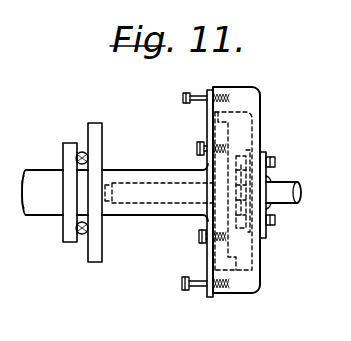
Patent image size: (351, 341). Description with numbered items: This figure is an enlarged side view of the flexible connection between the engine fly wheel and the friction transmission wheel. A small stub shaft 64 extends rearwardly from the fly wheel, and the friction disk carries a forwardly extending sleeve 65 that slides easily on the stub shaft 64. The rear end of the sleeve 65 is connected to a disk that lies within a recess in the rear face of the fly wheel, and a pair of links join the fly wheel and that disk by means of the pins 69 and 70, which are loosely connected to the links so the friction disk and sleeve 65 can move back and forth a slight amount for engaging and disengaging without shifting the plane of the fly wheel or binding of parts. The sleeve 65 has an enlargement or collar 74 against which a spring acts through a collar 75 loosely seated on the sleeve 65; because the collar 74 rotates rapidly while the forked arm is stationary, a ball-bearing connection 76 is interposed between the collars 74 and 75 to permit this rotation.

The stub shaft 64 is at (152, 197).
The sleeve 65 is at (170, 216).
The pin 69 is at (183, 98).
The pin 70 is at (197, 148).
The collar 74 is at (70, 245).
The collar 75 is at (96, 264).
The ball-bearing connection 76 is at (81, 152).